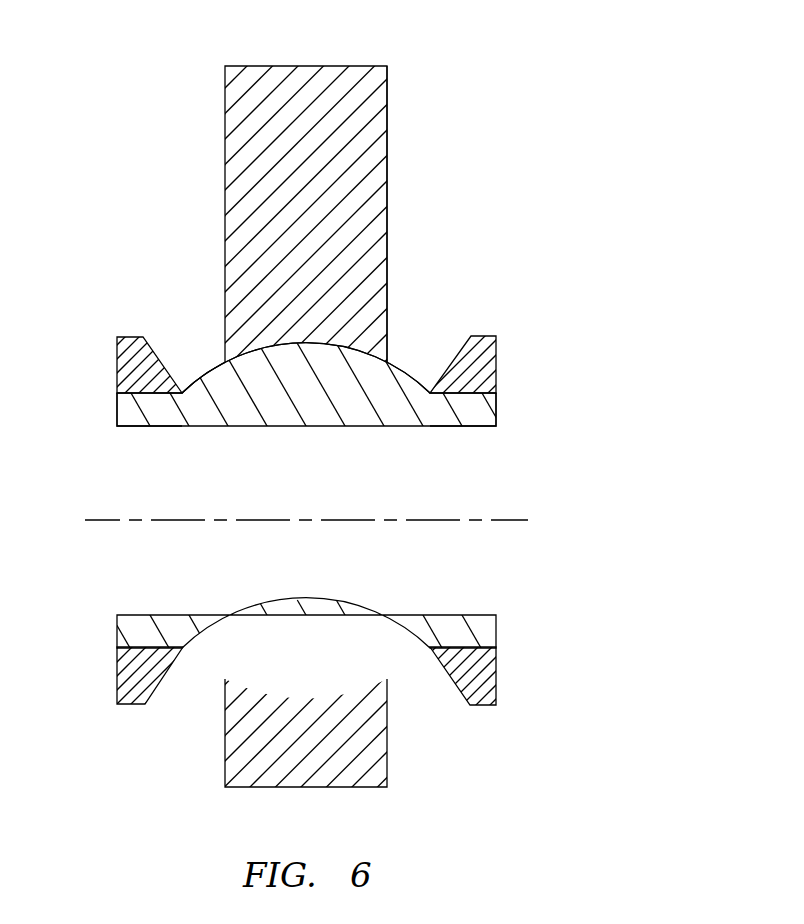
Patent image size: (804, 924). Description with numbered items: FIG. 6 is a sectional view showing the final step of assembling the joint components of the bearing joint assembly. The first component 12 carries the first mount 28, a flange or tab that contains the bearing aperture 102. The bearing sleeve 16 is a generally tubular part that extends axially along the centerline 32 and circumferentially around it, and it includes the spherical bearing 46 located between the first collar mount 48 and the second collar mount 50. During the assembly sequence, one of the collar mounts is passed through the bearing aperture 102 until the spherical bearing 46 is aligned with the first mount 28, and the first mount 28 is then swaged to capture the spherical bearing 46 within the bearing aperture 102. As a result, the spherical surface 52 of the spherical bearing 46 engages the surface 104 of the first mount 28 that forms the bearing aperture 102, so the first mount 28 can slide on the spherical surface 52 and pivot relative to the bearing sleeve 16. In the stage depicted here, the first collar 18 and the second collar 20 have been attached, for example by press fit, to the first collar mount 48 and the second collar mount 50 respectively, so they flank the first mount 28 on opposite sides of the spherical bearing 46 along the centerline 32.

The first component 12 is at (401, 87).
The first mount 28 is at (387, 153).
The bearing sleeve 16 is at (418, 352).
The first collar 18 is at (131, 323).
The second collar 20 is at (490, 323).
The spherical bearing 46 is at (272, 443).
The first collar mount 48 is at (142, 434).
The second collar mount 50 is at (472, 436).
The spherical surface 52 is at (204, 373).
The bearing aperture 102 is at (363, 347).
The surface of the first mount 104 is at (348, 348).
The centerline 32 is at (507, 520).